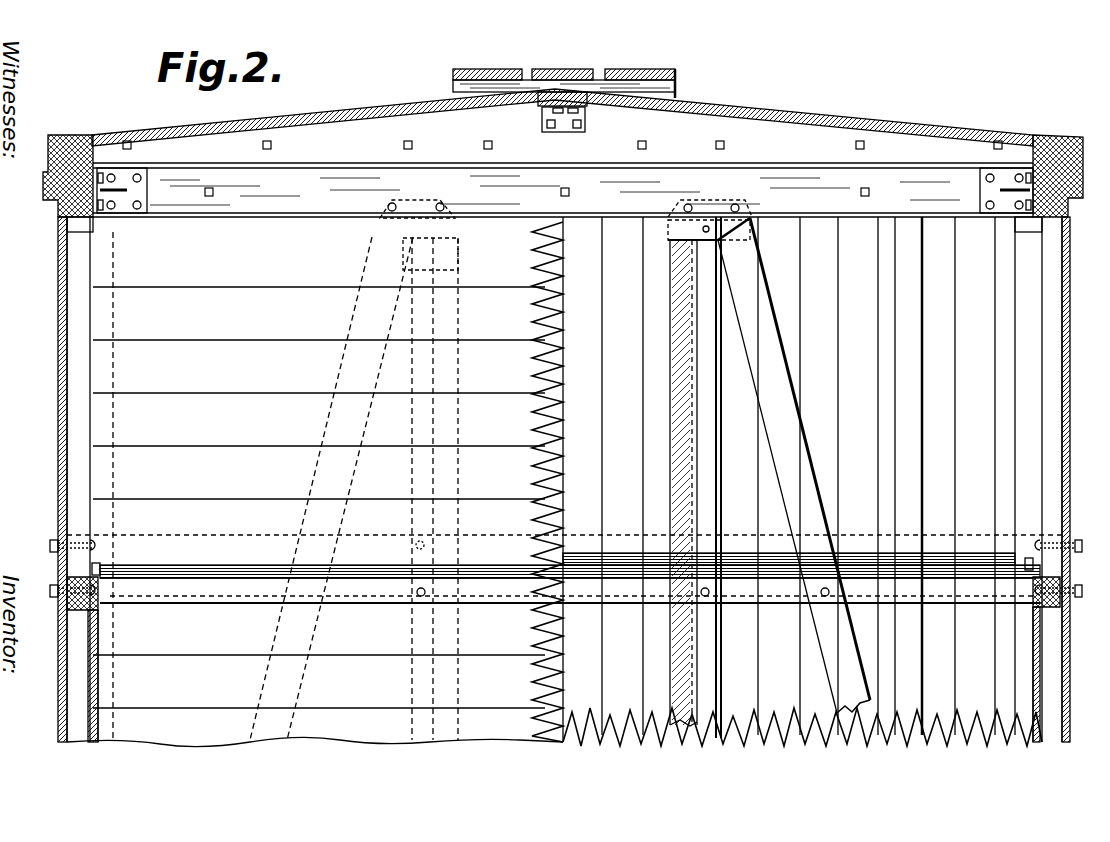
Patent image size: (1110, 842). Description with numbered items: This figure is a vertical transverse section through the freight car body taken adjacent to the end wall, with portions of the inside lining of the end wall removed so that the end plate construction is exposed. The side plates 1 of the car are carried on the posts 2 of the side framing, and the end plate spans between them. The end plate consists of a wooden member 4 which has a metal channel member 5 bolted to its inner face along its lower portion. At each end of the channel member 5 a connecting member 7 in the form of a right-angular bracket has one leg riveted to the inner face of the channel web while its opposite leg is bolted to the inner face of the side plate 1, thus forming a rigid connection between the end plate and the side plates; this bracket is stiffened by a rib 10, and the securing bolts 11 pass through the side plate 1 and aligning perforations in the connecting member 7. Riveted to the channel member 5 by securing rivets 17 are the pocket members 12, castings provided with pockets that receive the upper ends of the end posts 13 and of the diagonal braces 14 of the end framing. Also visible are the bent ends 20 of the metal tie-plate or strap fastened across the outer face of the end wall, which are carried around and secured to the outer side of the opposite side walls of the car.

The side plate 1 is at (65, 203).
The post 2 is at (78, 390).
The wooden member 4 is at (562, 109).
The channel member 5 is at (563, 190).
The connecting member 7 is at (138, 192).
The stiffening rib 10 is at (127, 192).
The securing bolt 11 is at (112, 211).
The pocket member 12 is at (684, 228).
The end post 13 is at (694, 484).
The diagonal brace 14 is at (777, 412).
The securing rivet 17 is at (438, 202).
The end of tie-plate 20 is at (56, 562).